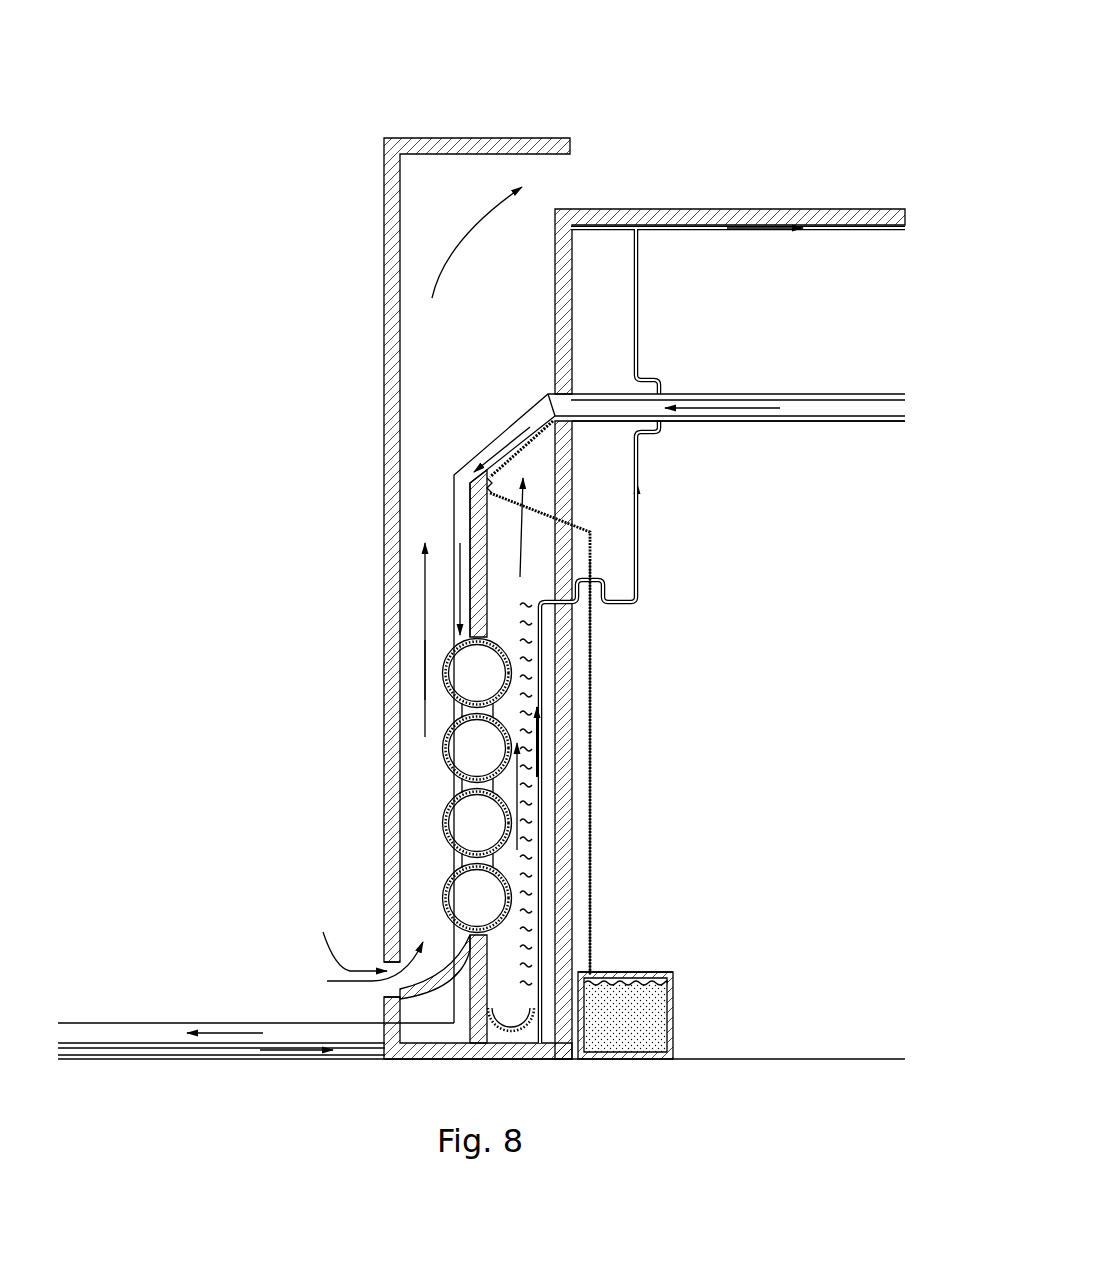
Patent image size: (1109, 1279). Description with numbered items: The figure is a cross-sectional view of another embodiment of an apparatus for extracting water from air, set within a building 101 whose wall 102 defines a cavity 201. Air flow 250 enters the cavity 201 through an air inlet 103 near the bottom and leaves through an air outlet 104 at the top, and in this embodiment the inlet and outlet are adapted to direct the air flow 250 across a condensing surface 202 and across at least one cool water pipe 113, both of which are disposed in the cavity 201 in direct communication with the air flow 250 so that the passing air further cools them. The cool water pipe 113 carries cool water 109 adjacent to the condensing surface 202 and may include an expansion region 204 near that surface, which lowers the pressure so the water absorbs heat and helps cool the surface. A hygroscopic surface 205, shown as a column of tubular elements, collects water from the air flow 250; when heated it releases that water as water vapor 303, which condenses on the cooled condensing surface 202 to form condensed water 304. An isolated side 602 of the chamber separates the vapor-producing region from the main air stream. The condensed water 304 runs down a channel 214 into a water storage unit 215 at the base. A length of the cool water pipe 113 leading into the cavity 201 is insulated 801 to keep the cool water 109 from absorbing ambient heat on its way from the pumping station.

The building 101 is at (728, 75).
The wall 102 is at (390, 288).
The air inlet 103 is at (364, 951).
The air outlet 104 is at (570, 177).
The cool water 109 is at (723, 407).
The cool water pipe 113 is at (816, 416).
The cavity 201 is at (410, 438).
The condensing surface 202 is at (543, 423).
The expansion region 204 is at (490, 458).
The hygroscopic surface 205 is at (445, 822).
The channel 214 is at (592, 875).
The water storage unit 215 is at (660, 972).
The air flow 250 is at (425, 642).
The water vapor 303 is at (520, 573).
The condensed water 304 is at (540, 440).
The isolated side 602 is at (483, 537).
The insulation 801 is at (732, 421).